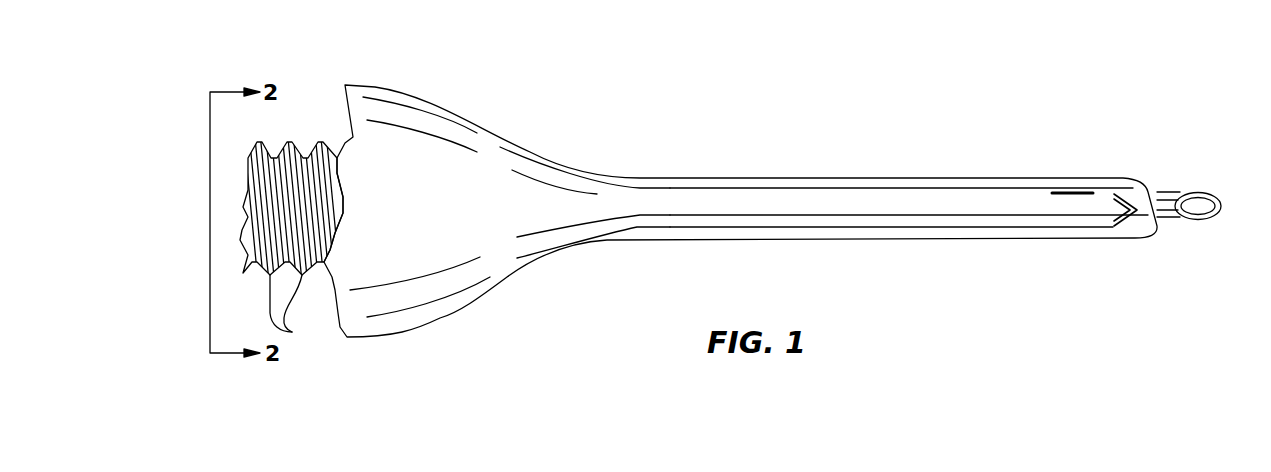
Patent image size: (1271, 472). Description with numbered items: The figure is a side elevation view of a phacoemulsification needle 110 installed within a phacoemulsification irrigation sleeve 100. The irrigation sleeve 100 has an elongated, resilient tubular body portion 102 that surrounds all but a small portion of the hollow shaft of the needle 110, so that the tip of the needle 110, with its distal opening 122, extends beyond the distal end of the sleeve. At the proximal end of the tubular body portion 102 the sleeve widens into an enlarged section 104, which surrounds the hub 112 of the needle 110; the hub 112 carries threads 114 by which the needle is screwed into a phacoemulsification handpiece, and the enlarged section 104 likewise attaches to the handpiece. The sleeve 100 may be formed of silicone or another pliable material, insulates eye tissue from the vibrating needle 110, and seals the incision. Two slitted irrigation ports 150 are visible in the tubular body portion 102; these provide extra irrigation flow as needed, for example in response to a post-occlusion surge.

The phacoemulsification irrigation sleeve 100 is at (714, 171).
The tubular body portion 102 is at (792, 178).
The enlarged section 104 is at (357, 92).
The phacoemulsification needle 110 is at (1177, 190).
The hub 112 is at (297, 126).
The threads 114 is at (292, 332).
The opening 122 is at (1214, 210).
The slitted irrigation ports 150 is at (1067, 192).